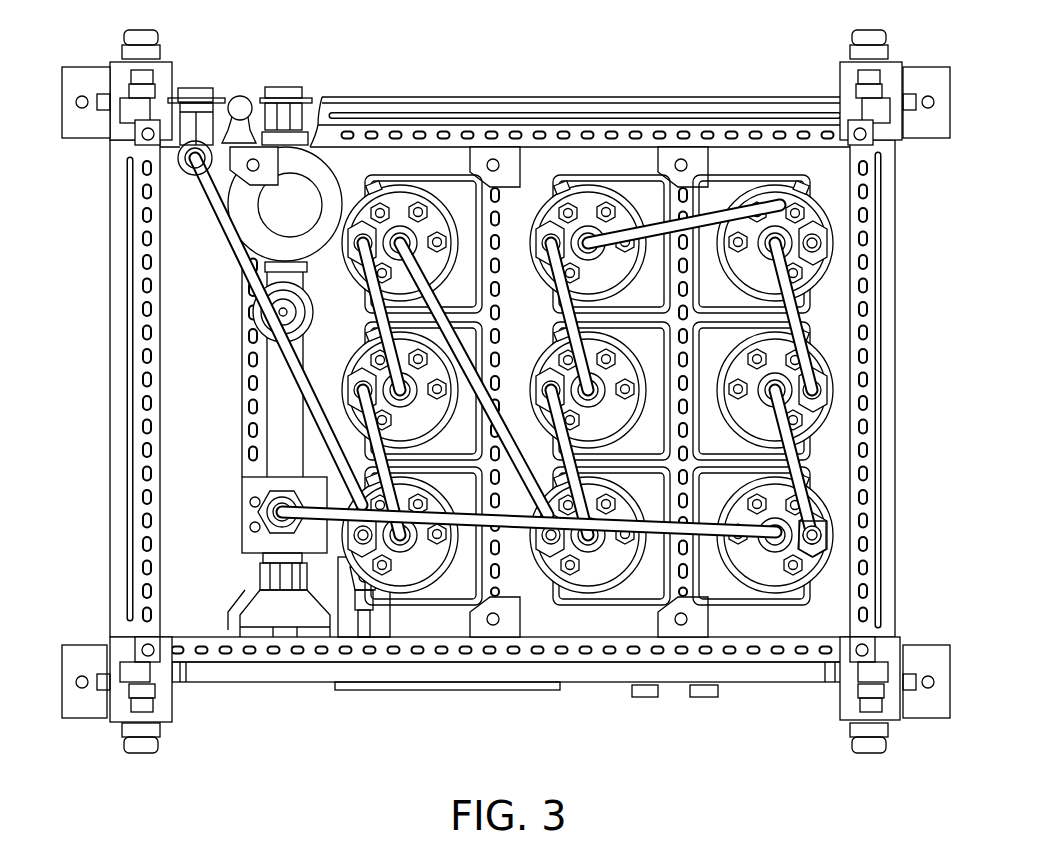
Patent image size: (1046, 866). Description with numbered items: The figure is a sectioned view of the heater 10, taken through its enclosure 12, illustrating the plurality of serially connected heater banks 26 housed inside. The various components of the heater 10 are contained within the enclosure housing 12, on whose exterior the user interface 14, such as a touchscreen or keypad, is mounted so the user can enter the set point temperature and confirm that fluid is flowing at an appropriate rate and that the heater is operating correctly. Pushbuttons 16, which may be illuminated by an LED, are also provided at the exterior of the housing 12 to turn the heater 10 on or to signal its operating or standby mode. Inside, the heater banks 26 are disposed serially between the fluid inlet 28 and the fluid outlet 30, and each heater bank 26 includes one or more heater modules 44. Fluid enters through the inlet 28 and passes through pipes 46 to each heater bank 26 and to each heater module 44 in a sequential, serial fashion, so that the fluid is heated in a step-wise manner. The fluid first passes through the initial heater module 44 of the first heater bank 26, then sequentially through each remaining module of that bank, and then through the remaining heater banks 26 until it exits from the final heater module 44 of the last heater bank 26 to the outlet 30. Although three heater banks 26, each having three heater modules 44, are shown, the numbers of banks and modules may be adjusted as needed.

The heater 10 is at (496, 391).
The enclosure 12 is at (357, 113).
The user interface 14 is at (495, 690).
The pushbuttons 16 is at (645, 698).
The heater banks 26 is at (650, 193).
The fluid inlet 28 is at (283, 86).
The fluid outlet 30 is at (196, 86).
The heater modules 44 is at (812, 548).
The pipes 46 is at (517, 522).